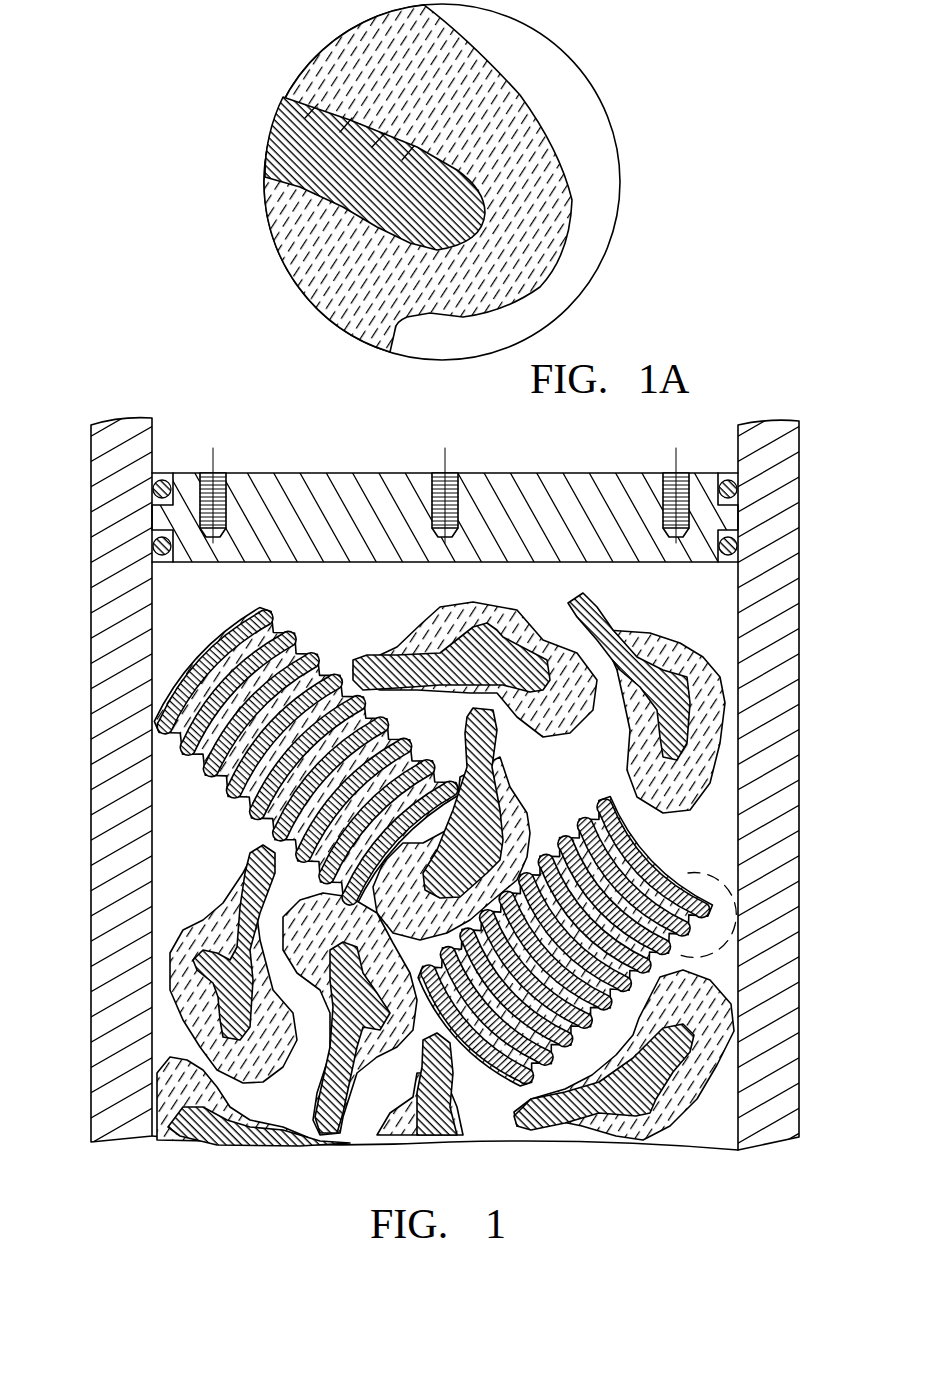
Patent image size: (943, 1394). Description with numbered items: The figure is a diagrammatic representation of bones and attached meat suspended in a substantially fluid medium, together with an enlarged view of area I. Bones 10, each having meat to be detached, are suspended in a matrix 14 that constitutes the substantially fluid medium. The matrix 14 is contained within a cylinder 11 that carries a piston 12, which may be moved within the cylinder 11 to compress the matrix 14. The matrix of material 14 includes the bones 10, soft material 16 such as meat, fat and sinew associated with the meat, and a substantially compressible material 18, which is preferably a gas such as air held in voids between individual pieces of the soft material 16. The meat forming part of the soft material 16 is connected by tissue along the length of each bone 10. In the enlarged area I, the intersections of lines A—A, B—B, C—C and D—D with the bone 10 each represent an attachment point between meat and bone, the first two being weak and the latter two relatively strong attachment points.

In FIG. 1A, the bones 10 is at (453, 193).
In FIG. 1, the bones 10 is at (547, 657).
In FIG. 1, the cylinder 11 is at (778, 968).
In FIG. 1, the piston 12 is at (346, 492).
In FIG. 1, the matrix 14 is at (378, 857).
In FIG. 1A, the soft material 16 is at (520, 217).
In FIG. 1, the soft material 16 is at (530, 850).
In FIG. 1A, the substantially compressible material 18 is at (548, 75).
In FIG. 1, the substantially compressible material 18 is at (364, 620).
In FIG. 1, the area I is at (731, 895).